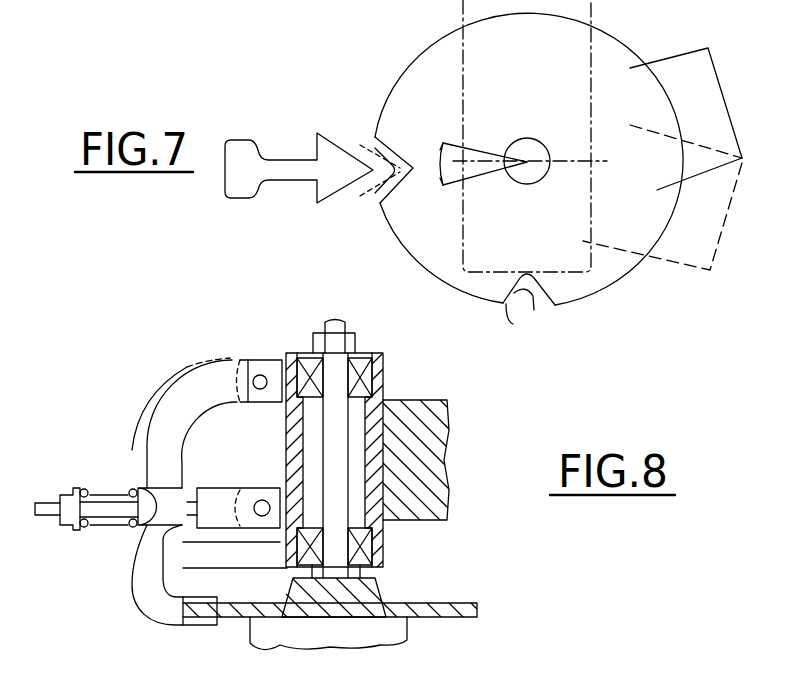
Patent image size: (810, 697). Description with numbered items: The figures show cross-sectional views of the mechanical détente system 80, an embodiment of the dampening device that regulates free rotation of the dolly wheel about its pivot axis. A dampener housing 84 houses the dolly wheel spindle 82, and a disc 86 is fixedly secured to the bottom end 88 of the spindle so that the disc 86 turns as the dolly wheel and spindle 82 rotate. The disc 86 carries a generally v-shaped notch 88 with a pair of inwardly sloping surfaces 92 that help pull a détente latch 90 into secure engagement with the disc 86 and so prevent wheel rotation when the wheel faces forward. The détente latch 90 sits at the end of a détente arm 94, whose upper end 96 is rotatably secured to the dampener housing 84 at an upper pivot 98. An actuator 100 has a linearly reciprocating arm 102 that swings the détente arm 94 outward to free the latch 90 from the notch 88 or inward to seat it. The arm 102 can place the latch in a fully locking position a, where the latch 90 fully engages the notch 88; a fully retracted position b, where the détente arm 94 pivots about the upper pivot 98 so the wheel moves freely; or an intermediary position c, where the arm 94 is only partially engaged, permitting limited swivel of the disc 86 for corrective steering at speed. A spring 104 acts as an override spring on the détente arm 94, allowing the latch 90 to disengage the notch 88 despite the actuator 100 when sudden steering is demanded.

In FIG. 8, the mechanical détente system 80 is at (177, 383).
In FIG. 7, the dolly wheel spindle 82 is at (527, 143).
In FIG. 8, the dolly wheel spindle 82 is at (337, 425).
In FIG. 8, the dampener housing 84 is at (380, 357).
In FIG. 7, the disc 86 is at (612, 278).
In FIG. 8, the disc 86 is at (443, 600).
In FIG. 7, the notch 88 is at (373, 197).
In FIG. 7, the détente latch 90 is at (318, 198).
In FIG. 8, the détente latch 90 is at (200, 622).
In FIG. 7, the inwardly sloping surfaces 92 is at (529, 313).
In FIG. 8, the détente arm 94 is at (163, 430).
In FIG. 8, the upper end 96 is at (233, 362).
In FIG. 8, the upper pivot 98 is at (273, 363).
In FIG. 8, the actuator 100 is at (232, 497).
In FIG. 8, the linearly reciprocating arm 102 is at (193, 497).
In FIG. 8, the spring 104 is at (100, 493).
In FIG. 7, the fully locking position a is at (370, 153).
In FIG. 7, the fully retracted position b is at (320, 133).
In FIG. 7, the intermediary position c is at (357, 147).